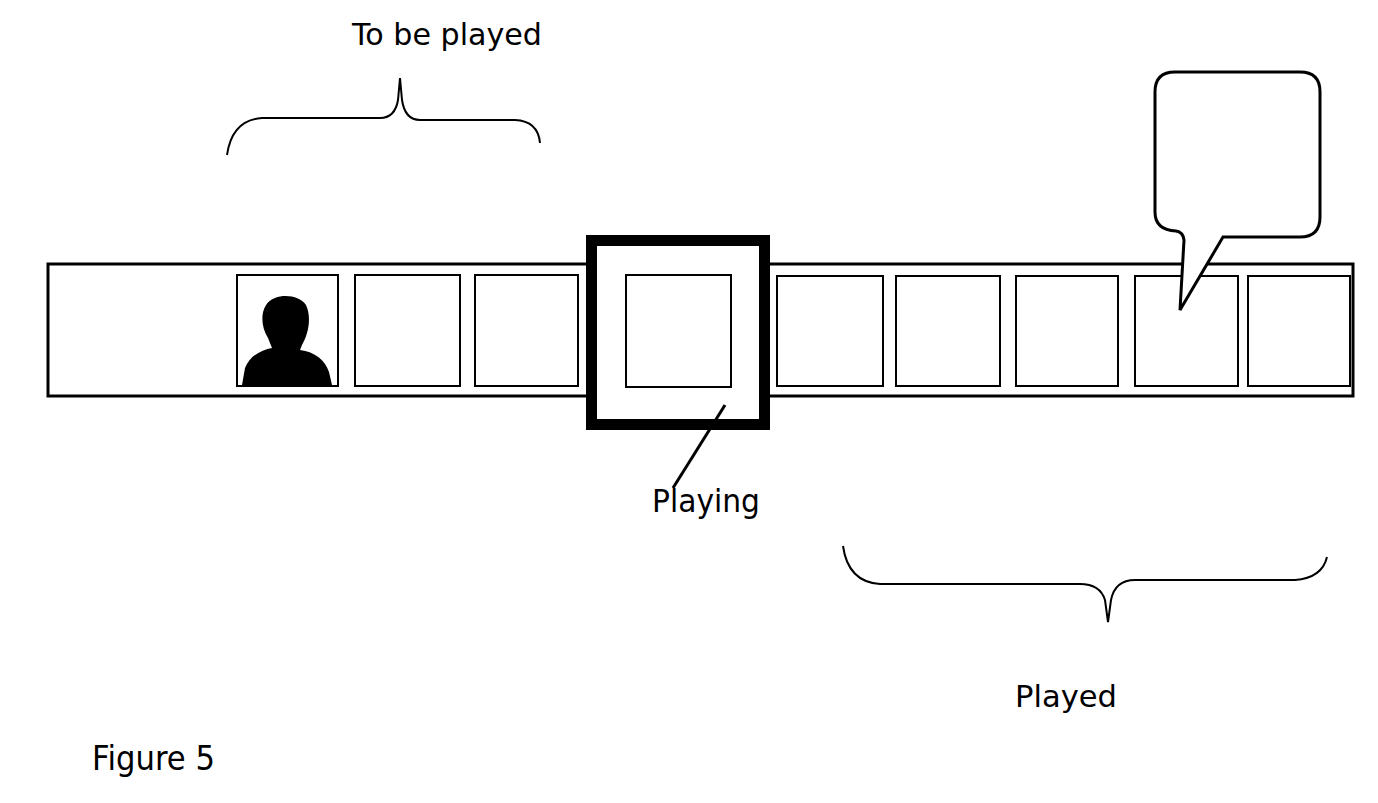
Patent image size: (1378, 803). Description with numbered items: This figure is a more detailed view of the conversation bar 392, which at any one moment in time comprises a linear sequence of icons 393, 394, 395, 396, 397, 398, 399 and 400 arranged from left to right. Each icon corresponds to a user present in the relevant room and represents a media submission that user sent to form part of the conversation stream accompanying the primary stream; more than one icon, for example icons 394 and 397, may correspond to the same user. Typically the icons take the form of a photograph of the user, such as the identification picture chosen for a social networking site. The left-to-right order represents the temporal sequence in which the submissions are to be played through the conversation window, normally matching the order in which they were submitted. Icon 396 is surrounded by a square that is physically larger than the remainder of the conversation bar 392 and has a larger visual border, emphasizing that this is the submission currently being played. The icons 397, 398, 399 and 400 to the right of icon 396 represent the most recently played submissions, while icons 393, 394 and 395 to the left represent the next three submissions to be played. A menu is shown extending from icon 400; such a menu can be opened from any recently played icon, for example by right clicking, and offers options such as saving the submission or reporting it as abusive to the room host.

The conversation bar 392 is at (700, 385).
The icon 393 is at (285, 298).
The icon 394 is at (403, 343).
The icon 395 is at (526, 287).
The icon 396 is at (677, 343).
The icon 397 is at (830, 292).
The icon 398 is at (936, 343).
The icon 399 is at (1167, 328).
The icon 400 is at (1257, 365).